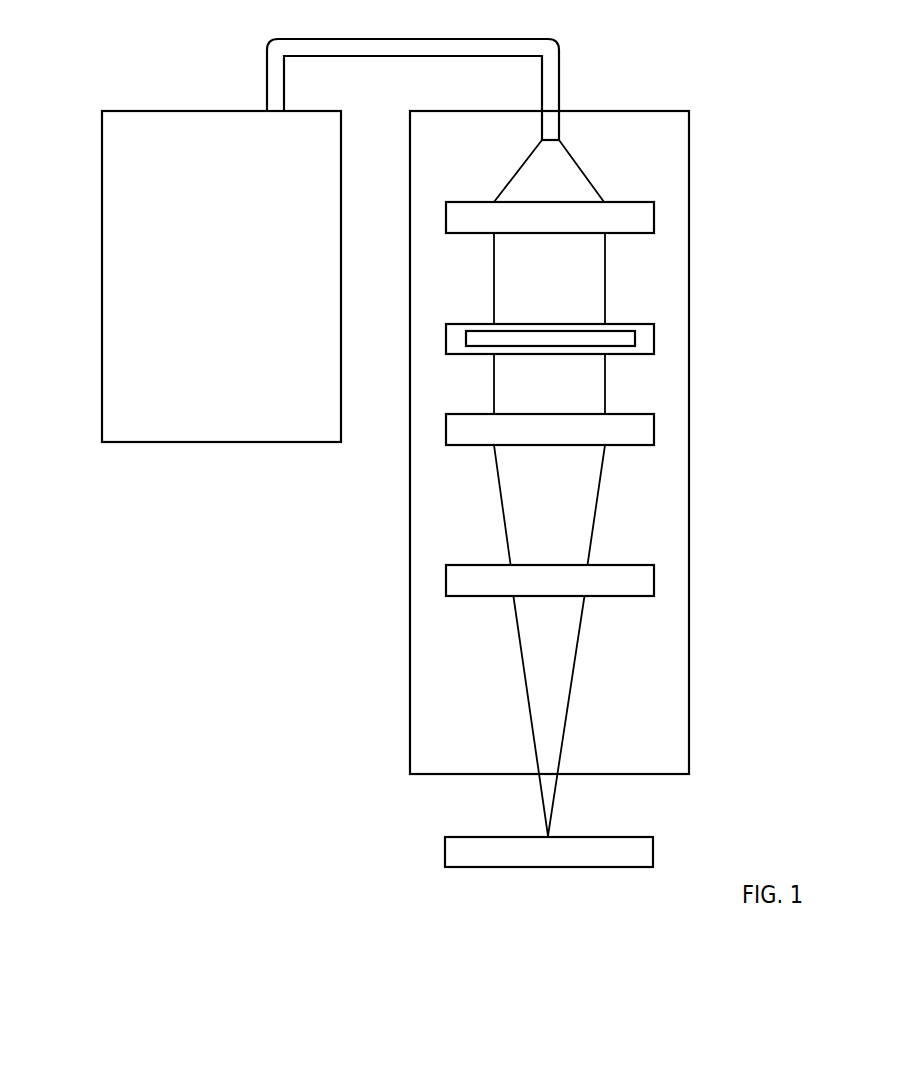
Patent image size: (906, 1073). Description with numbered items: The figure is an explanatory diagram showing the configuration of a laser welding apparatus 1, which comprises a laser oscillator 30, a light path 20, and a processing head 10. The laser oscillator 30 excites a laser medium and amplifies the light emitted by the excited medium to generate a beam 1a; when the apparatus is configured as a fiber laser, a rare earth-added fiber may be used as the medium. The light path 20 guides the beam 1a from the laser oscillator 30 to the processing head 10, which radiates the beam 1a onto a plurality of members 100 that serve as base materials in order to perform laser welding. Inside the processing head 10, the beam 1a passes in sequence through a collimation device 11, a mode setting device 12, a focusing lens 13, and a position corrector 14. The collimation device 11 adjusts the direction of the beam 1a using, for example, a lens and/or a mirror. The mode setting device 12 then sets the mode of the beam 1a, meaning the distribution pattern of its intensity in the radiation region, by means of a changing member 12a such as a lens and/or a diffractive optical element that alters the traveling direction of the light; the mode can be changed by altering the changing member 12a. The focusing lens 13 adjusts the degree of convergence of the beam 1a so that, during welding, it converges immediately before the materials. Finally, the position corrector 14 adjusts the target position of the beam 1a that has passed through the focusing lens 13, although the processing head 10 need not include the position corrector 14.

The laser welding apparatus 1 is at (125, 62).
The beam 1a is at (573, 692).
The processing head 10 is at (617, 111).
The collimation device 11 is at (650, 218).
The mode setting device 12 is at (596, 304).
The changing member 12a is at (605, 340).
The focusing lens 13 is at (647, 433).
The position corrector 14 is at (647, 578).
The light path 20 is at (556, 41).
The laser oscillator 30 is at (102, 263).
The members 100 is at (650, 849).